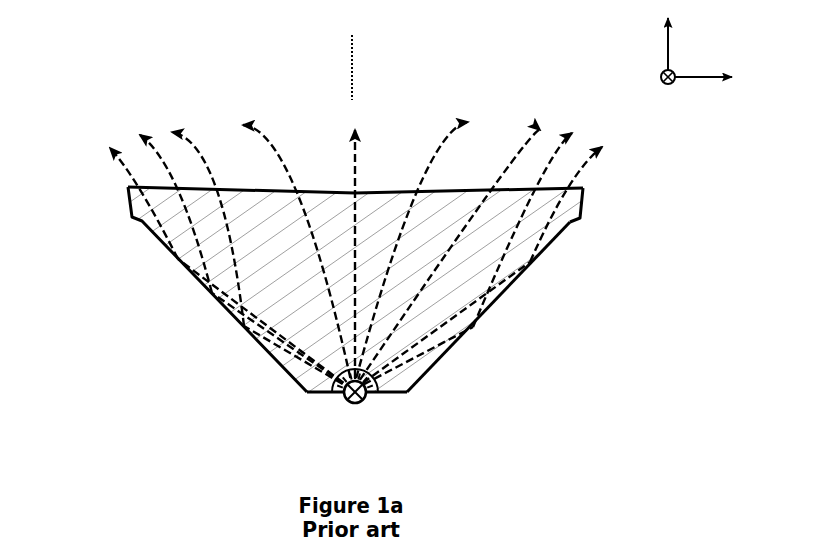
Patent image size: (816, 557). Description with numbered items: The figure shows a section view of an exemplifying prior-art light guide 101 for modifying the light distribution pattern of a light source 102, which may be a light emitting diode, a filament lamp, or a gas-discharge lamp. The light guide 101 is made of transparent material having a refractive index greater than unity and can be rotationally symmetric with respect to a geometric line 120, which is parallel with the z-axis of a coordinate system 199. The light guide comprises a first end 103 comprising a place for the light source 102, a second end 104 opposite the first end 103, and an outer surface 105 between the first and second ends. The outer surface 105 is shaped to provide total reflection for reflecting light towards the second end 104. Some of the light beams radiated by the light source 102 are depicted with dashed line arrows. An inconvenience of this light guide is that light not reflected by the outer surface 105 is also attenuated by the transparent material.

The light guide 101 is at (127, 205).
The light source 102 is at (360, 402).
The first end 103 is at (312, 395).
The second end 104 is at (320, 193).
The outer surface 105 is at (516, 296).
The geometric line 120 is at (353, 77).
The coordinate system 199 is at (677, 110).